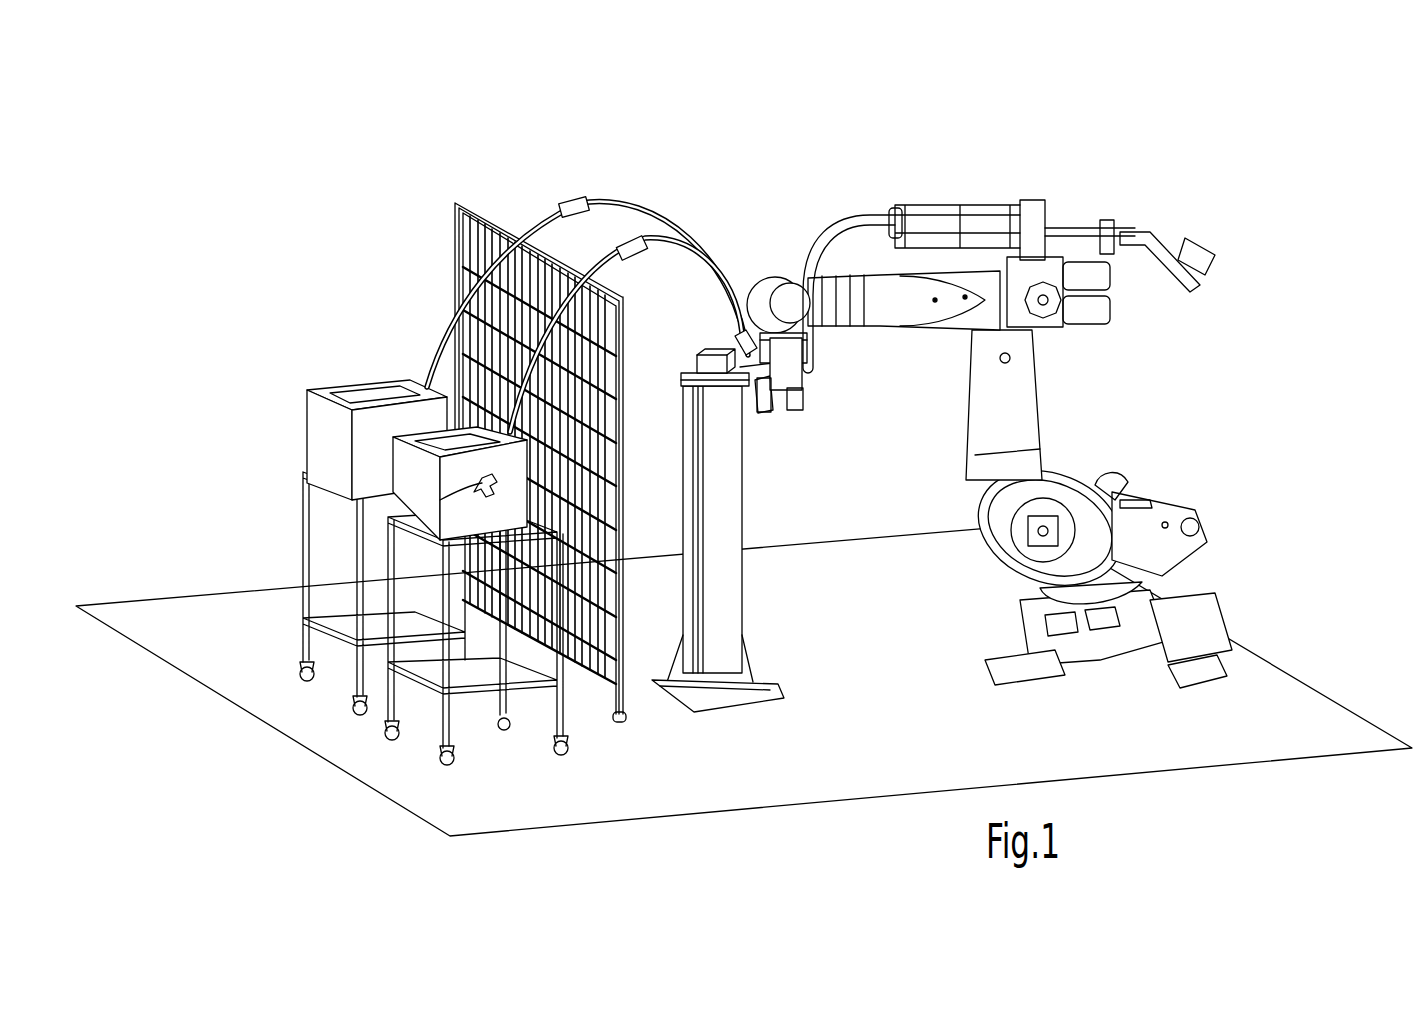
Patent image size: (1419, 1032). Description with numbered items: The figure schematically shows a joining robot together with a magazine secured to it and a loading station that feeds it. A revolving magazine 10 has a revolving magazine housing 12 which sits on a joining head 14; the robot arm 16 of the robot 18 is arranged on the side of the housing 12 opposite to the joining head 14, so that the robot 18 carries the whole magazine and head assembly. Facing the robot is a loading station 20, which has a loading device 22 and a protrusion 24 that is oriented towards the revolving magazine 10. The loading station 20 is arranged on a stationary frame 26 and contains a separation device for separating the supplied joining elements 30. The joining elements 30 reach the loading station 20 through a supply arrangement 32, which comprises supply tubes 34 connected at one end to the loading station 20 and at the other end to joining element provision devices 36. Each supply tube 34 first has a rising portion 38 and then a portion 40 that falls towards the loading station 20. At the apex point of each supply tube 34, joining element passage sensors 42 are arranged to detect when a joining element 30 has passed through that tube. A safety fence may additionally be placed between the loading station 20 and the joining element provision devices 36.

The revolving magazine 10 is at (1056, 421).
The revolving magazine housing 12 is at (802, 380).
The joining head 14 is at (812, 420).
The robot arm 16 is at (1015, 415).
The robot 18 is at (1160, 452).
The loading station 20 is at (722, 346).
The loading device 22 is at (763, 413).
The protrusion 24 is at (742, 335).
The stationary frame 26 is at (760, 486).
The joining elements 30 is at (480, 487).
The supply arrangement 32 is at (500, 178).
The supply tubes 34 is at (619, 267).
The joining element provision devices 36 is at (335, 420).
The rising portion 38 is at (452, 274).
The falling portion 40 is at (758, 250).
The joining element passage sensors 42 is at (576, 200).